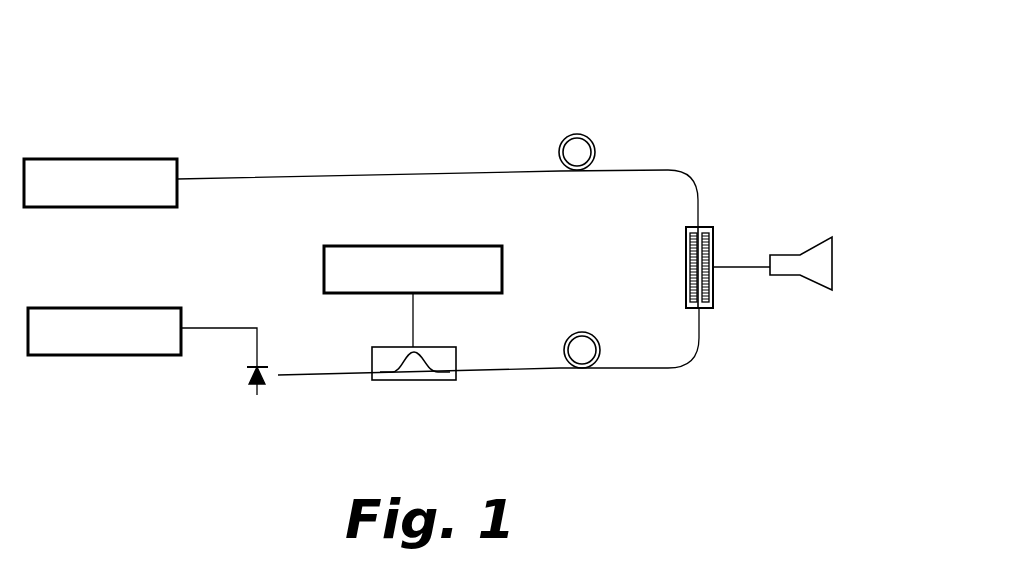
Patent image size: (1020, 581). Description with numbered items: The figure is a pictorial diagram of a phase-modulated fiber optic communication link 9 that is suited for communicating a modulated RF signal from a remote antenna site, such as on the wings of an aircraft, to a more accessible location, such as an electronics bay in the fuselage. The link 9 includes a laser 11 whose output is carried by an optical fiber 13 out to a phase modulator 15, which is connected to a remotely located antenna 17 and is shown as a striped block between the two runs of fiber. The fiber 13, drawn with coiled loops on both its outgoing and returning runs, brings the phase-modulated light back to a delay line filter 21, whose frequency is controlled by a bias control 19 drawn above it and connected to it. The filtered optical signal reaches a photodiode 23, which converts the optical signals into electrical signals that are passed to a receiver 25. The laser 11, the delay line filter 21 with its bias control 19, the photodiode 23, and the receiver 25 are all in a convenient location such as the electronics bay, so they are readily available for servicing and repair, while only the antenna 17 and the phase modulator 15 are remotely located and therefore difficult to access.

The phase-modulated fiber optic communication link 9 is at (637, 60).
The laser 11 is at (141, 158).
The optical fiber 13 is at (348, 176).
The phase modulator 15 is at (713, 237).
The remote antenna 17 is at (815, 285).
The bias control 19 is at (323, 270).
The delay line filter 21 is at (435, 347).
The photodiode 23 is at (266, 376).
The receiver 25 is at (65, 308).